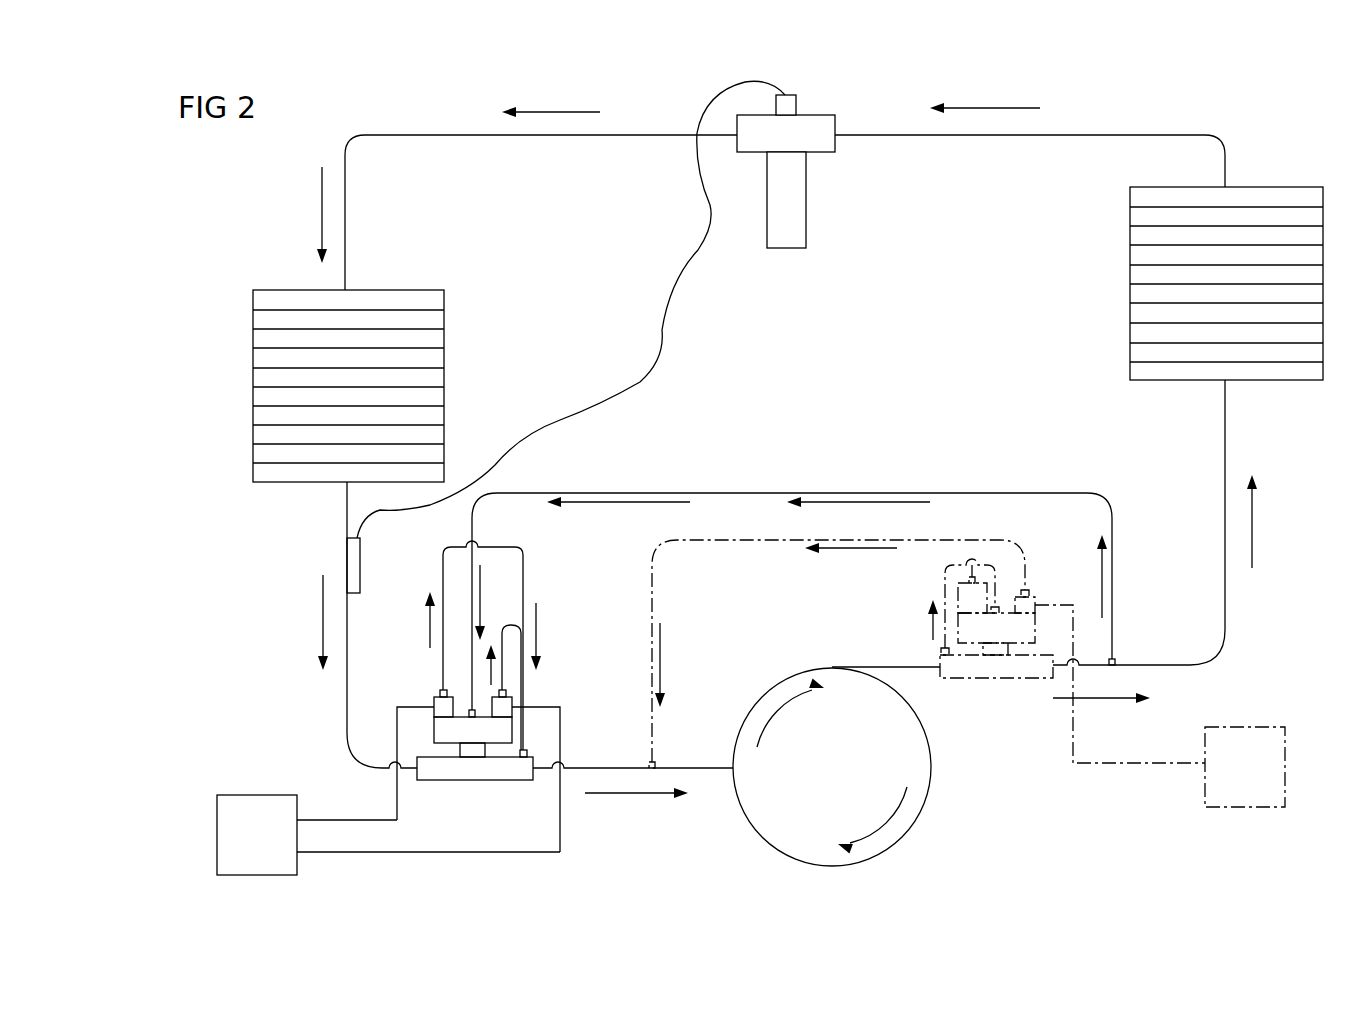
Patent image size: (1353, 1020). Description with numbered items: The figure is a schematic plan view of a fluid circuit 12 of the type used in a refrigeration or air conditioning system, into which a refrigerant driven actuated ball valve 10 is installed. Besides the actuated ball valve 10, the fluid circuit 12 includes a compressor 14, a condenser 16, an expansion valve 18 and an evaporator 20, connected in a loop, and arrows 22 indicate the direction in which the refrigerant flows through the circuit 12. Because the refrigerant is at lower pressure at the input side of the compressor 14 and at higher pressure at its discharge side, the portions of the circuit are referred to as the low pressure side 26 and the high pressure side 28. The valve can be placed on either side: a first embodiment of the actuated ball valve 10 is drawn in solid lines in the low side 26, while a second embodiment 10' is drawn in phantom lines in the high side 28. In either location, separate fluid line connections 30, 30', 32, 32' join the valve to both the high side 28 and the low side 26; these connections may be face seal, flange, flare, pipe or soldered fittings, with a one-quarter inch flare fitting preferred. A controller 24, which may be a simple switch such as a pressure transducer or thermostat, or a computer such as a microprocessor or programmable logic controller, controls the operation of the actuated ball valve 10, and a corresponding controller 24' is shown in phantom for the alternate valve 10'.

The actuated ball valve 10 is at (540, 667).
The second embodiment actuated ball valve 10' is at (930, 653).
The fluid circuit 12 is at (1210, 128).
The compressor 14 is at (756, 831).
The condenser 16 is at (1272, 380).
The expansion valve 18 is at (790, 248).
The evaporator 20 is at (253, 380).
The arrows 22 is at (572, 110).
The controller 24 is at (373, 814).
The controller 24' is at (1266, 744).
The low pressure side 26 is at (657, 478).
The high pressure side 28 is at (863, 443).
The fluid line connection 30 is at (793, 558).
The fluid line connection 30' is at (837, 654).
The fluid line connection 32 is at (486, 645).
The fluid line connection 32' is at (985, 579).